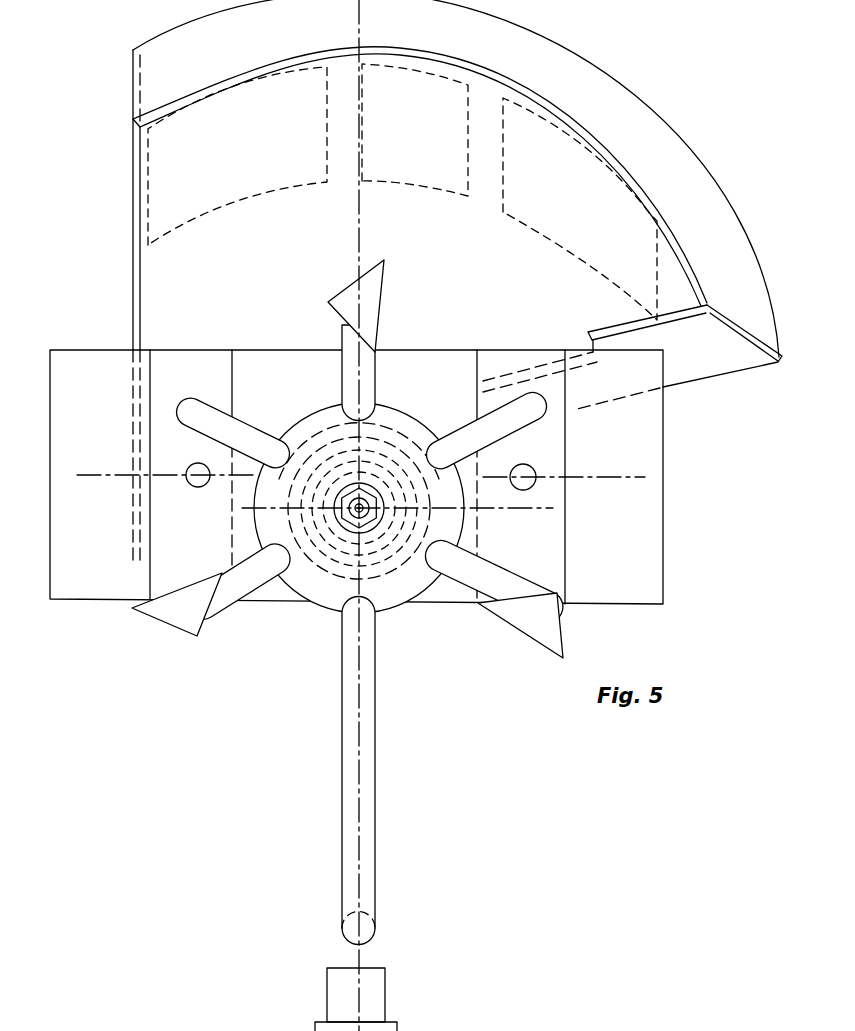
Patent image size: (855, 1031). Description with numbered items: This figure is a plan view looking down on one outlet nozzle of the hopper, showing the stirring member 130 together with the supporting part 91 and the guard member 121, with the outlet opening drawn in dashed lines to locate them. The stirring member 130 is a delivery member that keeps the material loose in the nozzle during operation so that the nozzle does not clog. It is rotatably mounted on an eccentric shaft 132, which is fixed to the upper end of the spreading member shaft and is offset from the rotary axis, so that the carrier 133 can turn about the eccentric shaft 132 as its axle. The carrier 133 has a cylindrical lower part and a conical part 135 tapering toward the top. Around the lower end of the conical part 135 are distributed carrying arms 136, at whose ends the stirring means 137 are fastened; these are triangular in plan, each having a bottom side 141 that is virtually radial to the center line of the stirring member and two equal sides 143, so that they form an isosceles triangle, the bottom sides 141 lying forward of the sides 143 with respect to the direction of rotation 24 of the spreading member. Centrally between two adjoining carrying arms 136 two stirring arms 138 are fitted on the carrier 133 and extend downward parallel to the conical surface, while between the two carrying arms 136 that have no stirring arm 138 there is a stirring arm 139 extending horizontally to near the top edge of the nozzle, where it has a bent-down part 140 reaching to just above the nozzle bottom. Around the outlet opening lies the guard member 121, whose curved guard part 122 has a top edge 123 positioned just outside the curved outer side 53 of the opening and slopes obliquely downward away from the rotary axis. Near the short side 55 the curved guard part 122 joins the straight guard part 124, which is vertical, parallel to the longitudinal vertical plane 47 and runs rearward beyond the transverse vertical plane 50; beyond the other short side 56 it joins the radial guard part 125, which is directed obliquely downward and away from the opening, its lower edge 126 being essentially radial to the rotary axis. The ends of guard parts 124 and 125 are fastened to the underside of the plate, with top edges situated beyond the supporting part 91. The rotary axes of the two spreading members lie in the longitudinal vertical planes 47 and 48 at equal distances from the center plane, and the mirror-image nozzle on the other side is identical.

The direction of rotation 24 is at (130, 708).
The longitudinal vertical plane 47 is at (358, 818).
The longitudinal vertical plane 48 is at (331, 1026).
The transverse vertical plane 50 is at (112, 447).
The curved outer side 53 is at (441, 68).
The short side 55 is at (150, 186).
The short side 56 is at (657, 249).
The supporting part 91 is at (665, 543).
The guard member 121 is at (420, 280).
The curved guard part 122 is at (598, 80).
The top edge 123 is at (495, 37).
The straight guard part 124 is at (133, 293).
The radial guard part 125 is at (715, 352).
The lower edge 126 is at (760, 364).
The stirring member 130 is at (407, 690).
The eccentric shaft 132 is at (425, 1028).
The carrier 133 is at (316, 600).
The conical part 135 is at (395, 585).
The carrying arm 136 is at (345, 374).
The stirring means 137 is at (373, 296).
The stirring arm 138 is at (220, 378).
The stirring arm 139 is at (348, 707).
The bent-down part 140 is at (342, 927).
The side 141 is at (537, 640).
The side 143 is at (538, 593).